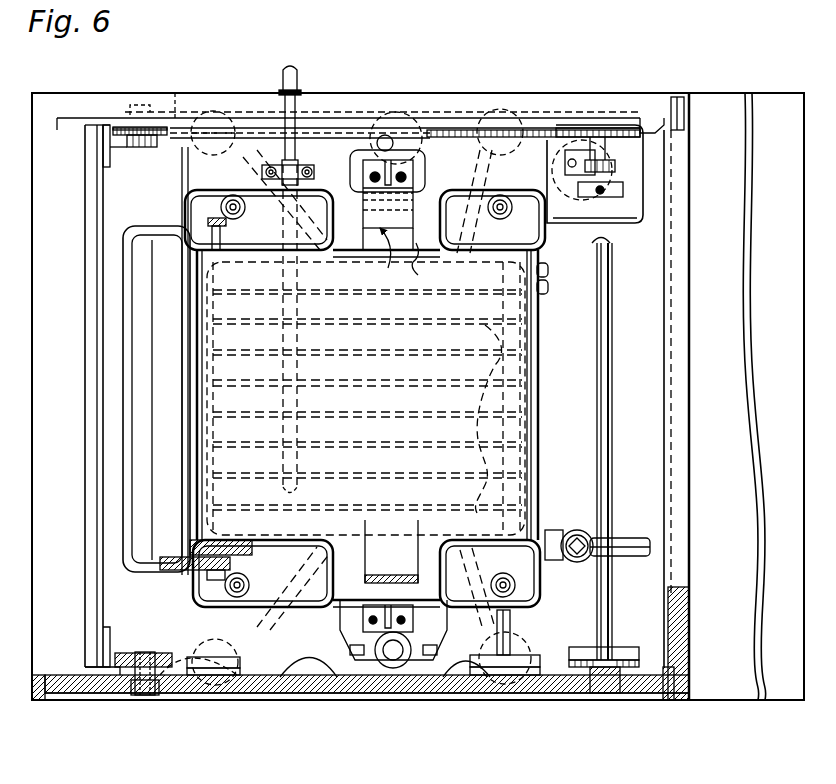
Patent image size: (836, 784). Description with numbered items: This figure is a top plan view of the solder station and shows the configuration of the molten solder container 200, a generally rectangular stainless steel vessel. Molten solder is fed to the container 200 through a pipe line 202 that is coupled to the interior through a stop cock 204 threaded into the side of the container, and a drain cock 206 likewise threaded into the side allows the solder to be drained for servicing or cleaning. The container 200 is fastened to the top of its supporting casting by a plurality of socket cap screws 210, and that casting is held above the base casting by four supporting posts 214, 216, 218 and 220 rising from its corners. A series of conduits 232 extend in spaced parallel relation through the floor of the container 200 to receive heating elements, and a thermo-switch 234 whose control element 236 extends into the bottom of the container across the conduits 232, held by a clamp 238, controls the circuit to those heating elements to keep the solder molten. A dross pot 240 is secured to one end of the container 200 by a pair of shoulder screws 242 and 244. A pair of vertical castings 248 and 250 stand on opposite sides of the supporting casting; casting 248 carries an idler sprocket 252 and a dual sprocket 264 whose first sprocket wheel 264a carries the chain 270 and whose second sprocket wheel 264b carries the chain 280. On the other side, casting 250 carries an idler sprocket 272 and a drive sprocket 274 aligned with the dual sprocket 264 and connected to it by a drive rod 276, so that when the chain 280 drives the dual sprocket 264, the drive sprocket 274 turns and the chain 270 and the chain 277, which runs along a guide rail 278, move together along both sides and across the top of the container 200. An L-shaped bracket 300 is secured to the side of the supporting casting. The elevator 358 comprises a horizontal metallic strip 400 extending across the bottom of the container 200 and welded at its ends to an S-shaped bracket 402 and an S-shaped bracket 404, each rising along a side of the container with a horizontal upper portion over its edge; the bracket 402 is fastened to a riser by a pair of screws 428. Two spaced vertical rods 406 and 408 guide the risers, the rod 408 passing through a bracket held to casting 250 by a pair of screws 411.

The molten solder container 200 is at (495, 465).
The pipe line 202 is at (632, 540).
The stop cock 204 is at (585, 535).
The drain cock 206 is at (544, 294).
The screws 210 is at (222, 204).
The supporting post 214 is at (222, 112).
The supporting post 216 is at (477, 125).
The supporting post 218 is at (516, 615).
The supporting post 220 is at (215, 655).
The conduits 232 is at (497, 377).
The thermo-switch 234 is at (300, 80).
The control element 236 is at (290, 465).
The clamp 238 is at (300, 170).
The dross pot 240 is at (140, 327).
The shoulder screw 242 is at (205, 573).
The shoulder screw 244 is at (210, 220).
The vertical casting 248 is at (242, 100).
The vertical casting 250 is at (235, 662).
The idler sprocket 252 is at (143, 128).
The dual sprocket 264 is at (589, 150).
The first sprocket wheel 264a is at (573, 133).
The second sprocket wheel 264b is at (620, 175).
The chain 270 is at (112, 128).
The idler sprocket 272 is at (130, 655).
The drive sprocket 274 is at (620, 650).
The drive rod 276 is at (600, 450).
The chain 277 is at (112, 680).
The guide rail 278 is at (210, 670).
The chain 280 is at (619, 165).
The L-shaped bracket 300 is at (623, 216).
The elevator 358 is at (361, 280).
The horizontal metallic strip 400 is at (431, 263).
The S-shaped metallic bracket 402 is at (413, 193).
The S-shaped metallic bracket 404 is at (400, 578).
The vertical rod 406 is at (375, 172).
The vertical rod 408 is at (393, 655).
The screws 411 is at (340, 665).
The screws 428 is at (395, 176).